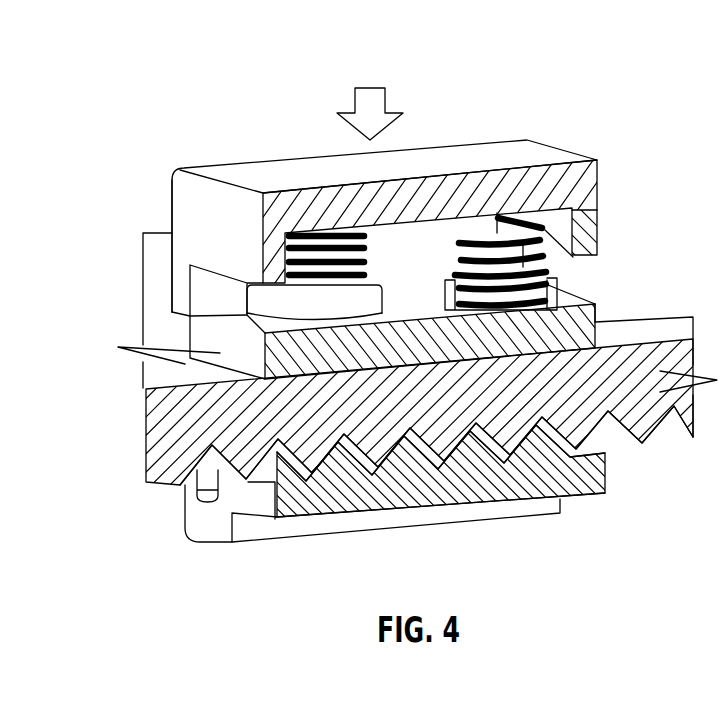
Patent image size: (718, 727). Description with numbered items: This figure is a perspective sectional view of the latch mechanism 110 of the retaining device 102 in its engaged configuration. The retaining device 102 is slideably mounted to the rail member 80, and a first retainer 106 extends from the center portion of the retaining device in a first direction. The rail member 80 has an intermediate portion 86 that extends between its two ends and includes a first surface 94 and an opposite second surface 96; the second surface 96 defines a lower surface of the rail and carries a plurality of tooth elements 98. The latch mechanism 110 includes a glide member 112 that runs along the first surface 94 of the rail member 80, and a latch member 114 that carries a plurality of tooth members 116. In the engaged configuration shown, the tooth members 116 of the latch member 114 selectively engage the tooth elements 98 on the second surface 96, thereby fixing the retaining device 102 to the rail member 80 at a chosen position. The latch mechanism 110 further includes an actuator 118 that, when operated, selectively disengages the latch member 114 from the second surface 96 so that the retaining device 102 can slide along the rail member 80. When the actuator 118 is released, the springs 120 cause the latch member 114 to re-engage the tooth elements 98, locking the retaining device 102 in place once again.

The retaining device 102 is at (562, 78).
The actuator 118 is at (585, 180).
The first retainer 106 is at (163, 248).
The latch mechanism 110 is at (122, 263).
The rail member 80 is at (622, 290).
The first surface 94 is at (647, 333).
The springs 120 is at (462, 229).
The glide member 112 is at (220, 354).
The intermediate portion 86 is at (640, 373).
The second surface 96 is at (610, 412).
The tooth elements 98 is at (540, 450).
The latch member 114 is at (423, 490).
The tooth members 116 is at (310, 517).